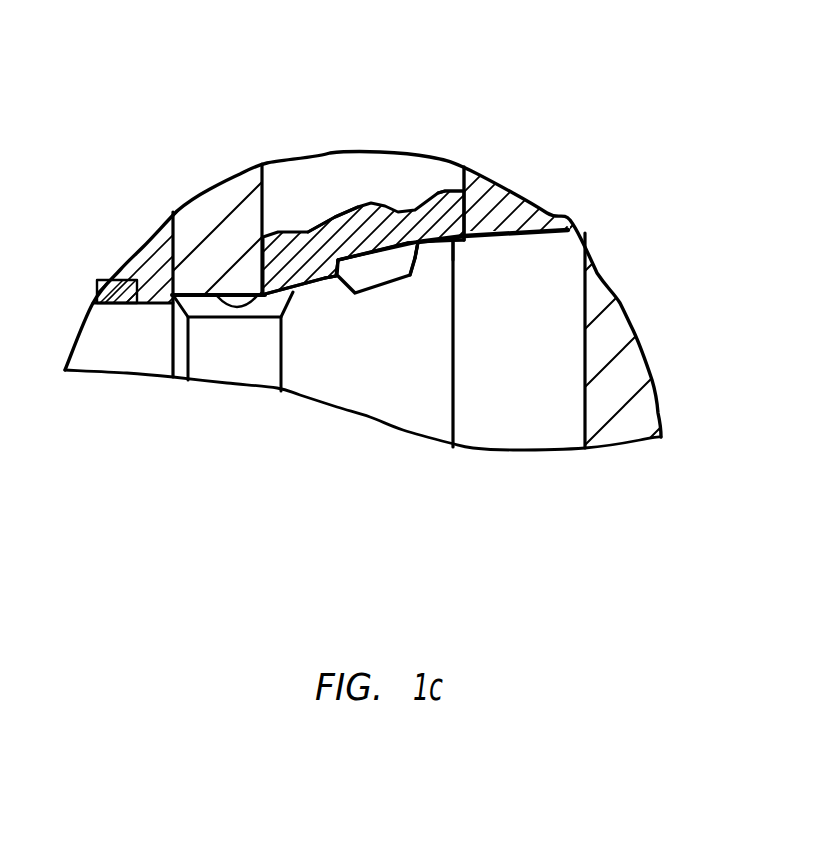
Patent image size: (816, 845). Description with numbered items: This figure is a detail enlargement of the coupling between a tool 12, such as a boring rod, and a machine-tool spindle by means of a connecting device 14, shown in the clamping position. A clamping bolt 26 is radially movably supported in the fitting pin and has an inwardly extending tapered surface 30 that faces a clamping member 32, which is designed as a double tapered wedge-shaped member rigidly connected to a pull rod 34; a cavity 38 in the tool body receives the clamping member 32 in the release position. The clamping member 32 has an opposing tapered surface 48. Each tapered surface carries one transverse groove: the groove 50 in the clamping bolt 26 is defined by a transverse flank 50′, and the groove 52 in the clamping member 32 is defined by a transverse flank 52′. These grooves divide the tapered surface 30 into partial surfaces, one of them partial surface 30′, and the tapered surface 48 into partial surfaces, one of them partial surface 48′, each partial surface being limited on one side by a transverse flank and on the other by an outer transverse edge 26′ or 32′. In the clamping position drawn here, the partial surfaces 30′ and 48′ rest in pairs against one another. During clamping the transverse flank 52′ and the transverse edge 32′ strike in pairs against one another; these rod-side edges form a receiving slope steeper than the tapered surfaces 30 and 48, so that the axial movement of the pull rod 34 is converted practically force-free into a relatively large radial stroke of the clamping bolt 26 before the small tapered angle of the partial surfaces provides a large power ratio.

The tool 12 is at (632, 381).
The connecting device 14 is at (208, 207).
The clamping bolt 26 is at (363, 175).
The outer transverse edge 26′ is at (207, 283).
The tapered surface 30 is at (433, 242).
The partial surface 30′ is at (338, 290).
The clamping member 32 is at (411, 382).
The outer transverse edge 32′ is at (342, 273).
The pull rod 34 is at (128, 345).
The cavity 38 is at (538, 242).
The tapered surface 48 is at (432, 265).
The partial surface 48′ is at (327, 280).
The transverse groove 50 is at (372, 285).
The transverse flank 50′ is at (297, 293).
The transverse groove 52 is at (386, 261).
The transverse flank 52′ is at (316, 235).